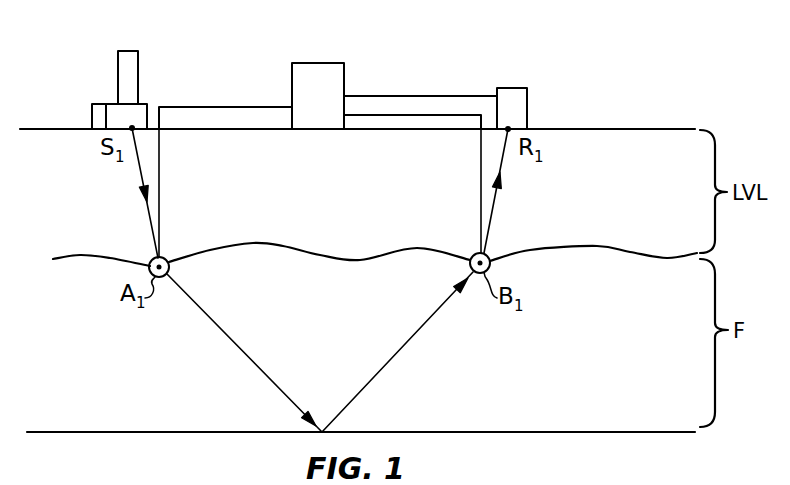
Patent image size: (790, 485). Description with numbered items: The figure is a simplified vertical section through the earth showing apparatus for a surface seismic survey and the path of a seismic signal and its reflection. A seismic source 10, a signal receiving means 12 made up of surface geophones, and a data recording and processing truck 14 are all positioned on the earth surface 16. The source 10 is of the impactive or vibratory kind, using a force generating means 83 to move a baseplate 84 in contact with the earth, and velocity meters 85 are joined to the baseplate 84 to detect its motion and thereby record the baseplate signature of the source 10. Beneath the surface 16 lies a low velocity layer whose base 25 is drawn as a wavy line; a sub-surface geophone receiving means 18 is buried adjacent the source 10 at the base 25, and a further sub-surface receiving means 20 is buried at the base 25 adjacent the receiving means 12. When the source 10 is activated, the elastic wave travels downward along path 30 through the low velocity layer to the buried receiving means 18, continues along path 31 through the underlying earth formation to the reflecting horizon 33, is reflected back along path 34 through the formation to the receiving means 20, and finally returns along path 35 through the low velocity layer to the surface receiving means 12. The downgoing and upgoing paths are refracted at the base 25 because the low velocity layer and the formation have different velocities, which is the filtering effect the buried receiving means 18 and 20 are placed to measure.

The seismic source 10 is at (299, 72).
The signal receiving means 12 is at (524, 88).
The data recording and processing truck 14 is at (344, 70).
The earth surface 16 is at (603, 129).
The sub-surface geophone receiving means 18 is at (165, 257).
The further sub-surface receiving means 20 is at (488, 256).
The base of the LVL 25 is at (82, 253).
The downgoing path through the LVL 30 is at (141, 172).
The downgoing path through the formation 31 is at (240, 352).
The horizon 33 is at (508, 431).
The upgoing reflected path through the formation 34 is at (401, 352).
The upgoing path through the LVL 35 is at (499, 200).
The force generating means 83 is at (119, 62).
The baseplate 84 is at (114, 107).
The velocity meters 85 is at (97, 117).